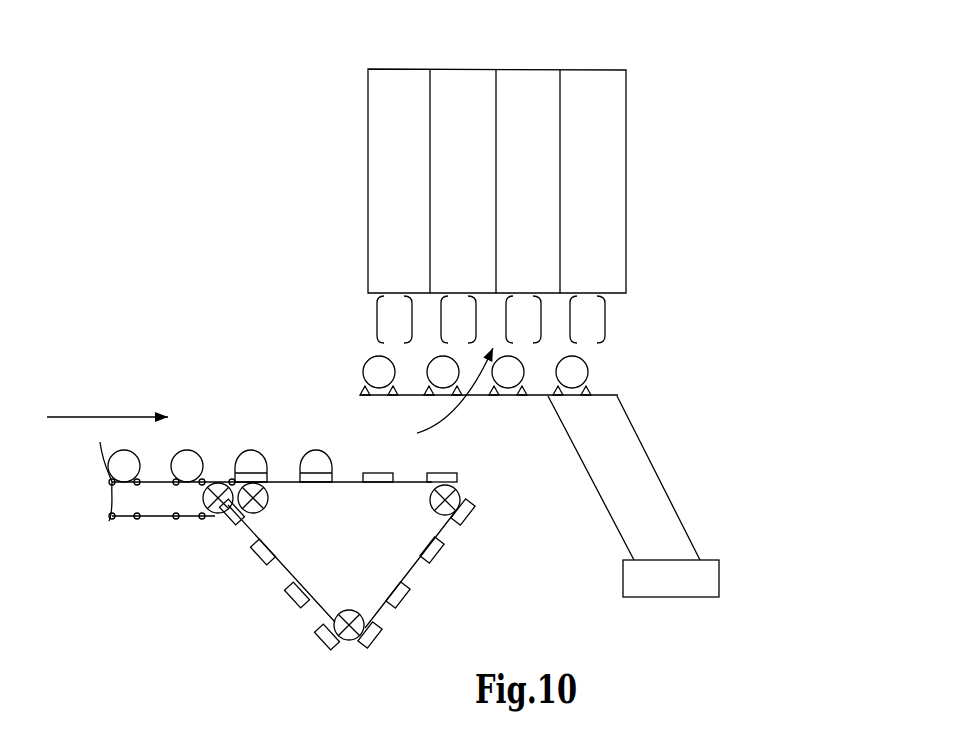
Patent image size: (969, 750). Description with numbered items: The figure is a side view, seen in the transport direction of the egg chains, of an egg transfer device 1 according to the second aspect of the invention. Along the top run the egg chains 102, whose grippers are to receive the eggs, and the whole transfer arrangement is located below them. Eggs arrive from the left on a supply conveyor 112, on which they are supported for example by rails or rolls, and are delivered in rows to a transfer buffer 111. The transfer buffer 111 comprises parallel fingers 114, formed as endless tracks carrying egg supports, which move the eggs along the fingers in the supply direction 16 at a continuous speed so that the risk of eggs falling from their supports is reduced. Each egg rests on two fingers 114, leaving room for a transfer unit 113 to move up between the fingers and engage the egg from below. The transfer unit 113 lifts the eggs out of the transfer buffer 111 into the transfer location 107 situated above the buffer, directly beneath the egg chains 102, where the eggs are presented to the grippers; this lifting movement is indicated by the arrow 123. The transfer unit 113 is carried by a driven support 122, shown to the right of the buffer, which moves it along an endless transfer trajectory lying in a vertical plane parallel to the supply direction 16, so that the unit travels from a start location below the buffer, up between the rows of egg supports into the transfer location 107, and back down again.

The packaging apparatus 1 is at (709, 106).
The egg chains 102 is at (593, 71).
The transfer location 107 is at (613, 359).
The transfer unit 113 is at (352, 352).
The arrow indicating direction of movement 123 is at (456, 412).
The driven support 122 is at (679, 466).
The transport direction 16 is at (90, 418).
The supply conveyor 112 is at (188, 436).
The transfer buffer 111 is at (286, 430).
The fingers 114 is at (279, 608).